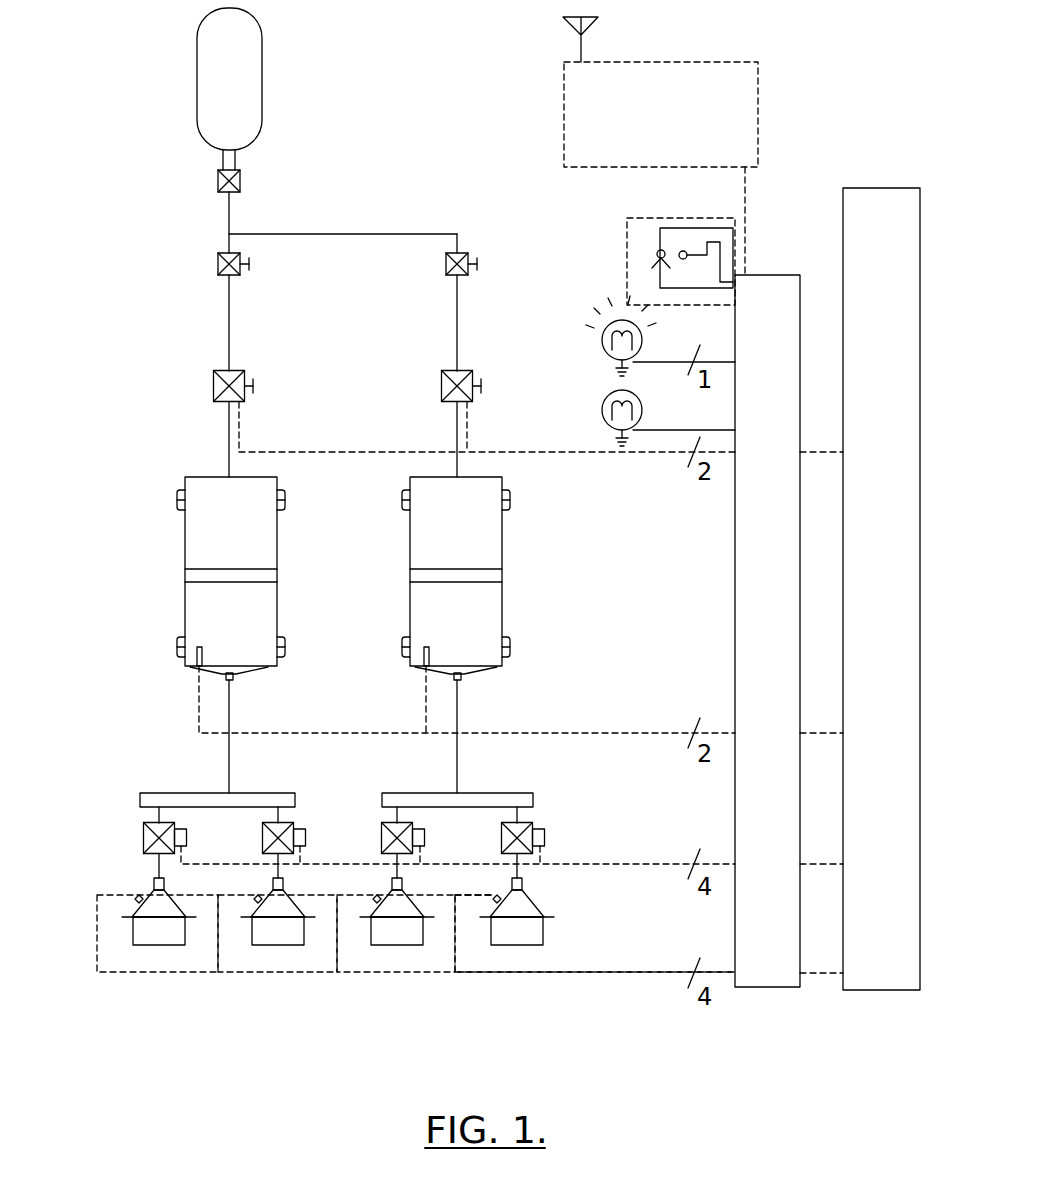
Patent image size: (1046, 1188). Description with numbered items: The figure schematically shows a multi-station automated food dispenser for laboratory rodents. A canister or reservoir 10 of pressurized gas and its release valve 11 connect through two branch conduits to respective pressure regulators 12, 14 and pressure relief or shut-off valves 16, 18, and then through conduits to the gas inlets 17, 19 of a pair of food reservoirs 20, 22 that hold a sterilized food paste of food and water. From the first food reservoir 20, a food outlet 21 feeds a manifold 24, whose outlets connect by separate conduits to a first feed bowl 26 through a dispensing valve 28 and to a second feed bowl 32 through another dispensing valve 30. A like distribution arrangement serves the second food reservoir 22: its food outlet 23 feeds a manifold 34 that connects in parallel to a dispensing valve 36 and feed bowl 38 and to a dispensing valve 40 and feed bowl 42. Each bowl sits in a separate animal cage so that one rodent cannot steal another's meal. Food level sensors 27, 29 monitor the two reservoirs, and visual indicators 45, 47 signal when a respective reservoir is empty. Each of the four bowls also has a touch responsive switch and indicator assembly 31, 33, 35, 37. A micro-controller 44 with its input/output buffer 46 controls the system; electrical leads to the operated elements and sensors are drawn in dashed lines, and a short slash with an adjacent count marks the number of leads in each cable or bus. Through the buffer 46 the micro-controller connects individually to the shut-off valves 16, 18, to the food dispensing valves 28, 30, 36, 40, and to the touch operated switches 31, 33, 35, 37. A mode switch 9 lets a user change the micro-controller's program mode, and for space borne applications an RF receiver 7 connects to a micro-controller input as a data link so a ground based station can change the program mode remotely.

The RF receiver 7 is at (670, 129).
The mode switch 9 is at (627, 258).
The canister or reservoir of pressurized gas 10 is at (197, 55).
The release valve 11 is at (218, 178).
The pressure regulator 12 is at (218, 260).
The pressure regulator 14 is at (446, 262).
The pressure relief valve (shut-off valve) 16 is at (213, 378).
The gas inlet 17 is at (228, 475).
The pressure relief valve (shut-off valve) 18 is at (442, 378).
The gas inlet 19 is at (456, 475).
The food reservoir 20 is at (185, 585).
The food outlet 21 is at (233, 678).
The food reservoir 22 is at (410, 585).
The food outlet 23 is at (461, 678).
The manifold 24 is at (140, 793).
The first feed bowl 26 is at (133, 931).
The food level sensor 27 is at (199, 647).
The dispensing valve 28 is at (143, 830).
The food level sensor 29 is at (426, 647).
The dispensing valve 30 is at (290, 828).
The touch responsive switch and indicator assembly 31 is at (150, 893).
The second feed bowl 32 is at (252, 931).
The touch responsive switch and indicator assembly 33 is at (268, 893).
The manifold 34 is at (525, 793).
The touch responsive switch and indicator assembly 35 is at (388, 893).
The dispensing valve 36 is at (425, 838).
The touch responsive switch and indicator assembly 37 is at (508, 893).
The feed bowl 38 is at (410, 906).
The dispensing valve 40 is at (545, 840).
The feed bowl 42 is at (536, 906).
The micro-controller 44 is at (843, 222).
The visual indicator 45 is at (603, 353).
The input/output buffer 46 is at (735, 612).
The visual indicator 47 is at (602, 410).